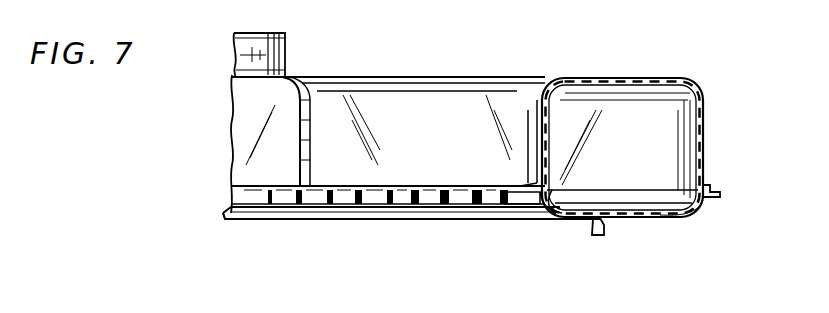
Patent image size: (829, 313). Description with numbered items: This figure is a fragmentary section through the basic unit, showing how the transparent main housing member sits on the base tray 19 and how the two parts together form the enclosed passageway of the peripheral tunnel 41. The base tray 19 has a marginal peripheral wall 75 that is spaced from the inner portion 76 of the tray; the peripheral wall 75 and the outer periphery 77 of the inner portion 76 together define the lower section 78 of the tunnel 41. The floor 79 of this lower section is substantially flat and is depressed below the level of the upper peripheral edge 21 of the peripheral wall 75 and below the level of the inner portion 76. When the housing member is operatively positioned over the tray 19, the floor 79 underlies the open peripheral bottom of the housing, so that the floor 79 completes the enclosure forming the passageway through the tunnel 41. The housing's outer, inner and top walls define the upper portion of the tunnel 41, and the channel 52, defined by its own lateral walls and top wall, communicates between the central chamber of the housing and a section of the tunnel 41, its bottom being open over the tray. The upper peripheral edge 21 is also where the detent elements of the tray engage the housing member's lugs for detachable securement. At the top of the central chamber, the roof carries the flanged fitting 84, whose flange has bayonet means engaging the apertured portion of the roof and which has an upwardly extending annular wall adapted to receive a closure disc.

The base tray 19 is at (503, 226).
The upper peripheral edge 21 is at (718, 181).
The peripheral tunnel 41 is at (673, 133).
The channel 52 is at (298, 97).
The marginal peripheral wall 75 is at (700, 208).
The inner portion 76 is at (515, 190).
The outer periphery 77 is at (543, 190).
The lower section 78 is at (556, 207).
The floor 79 is at (655, 208).
The flanged fitting 84 is at (287, 48).